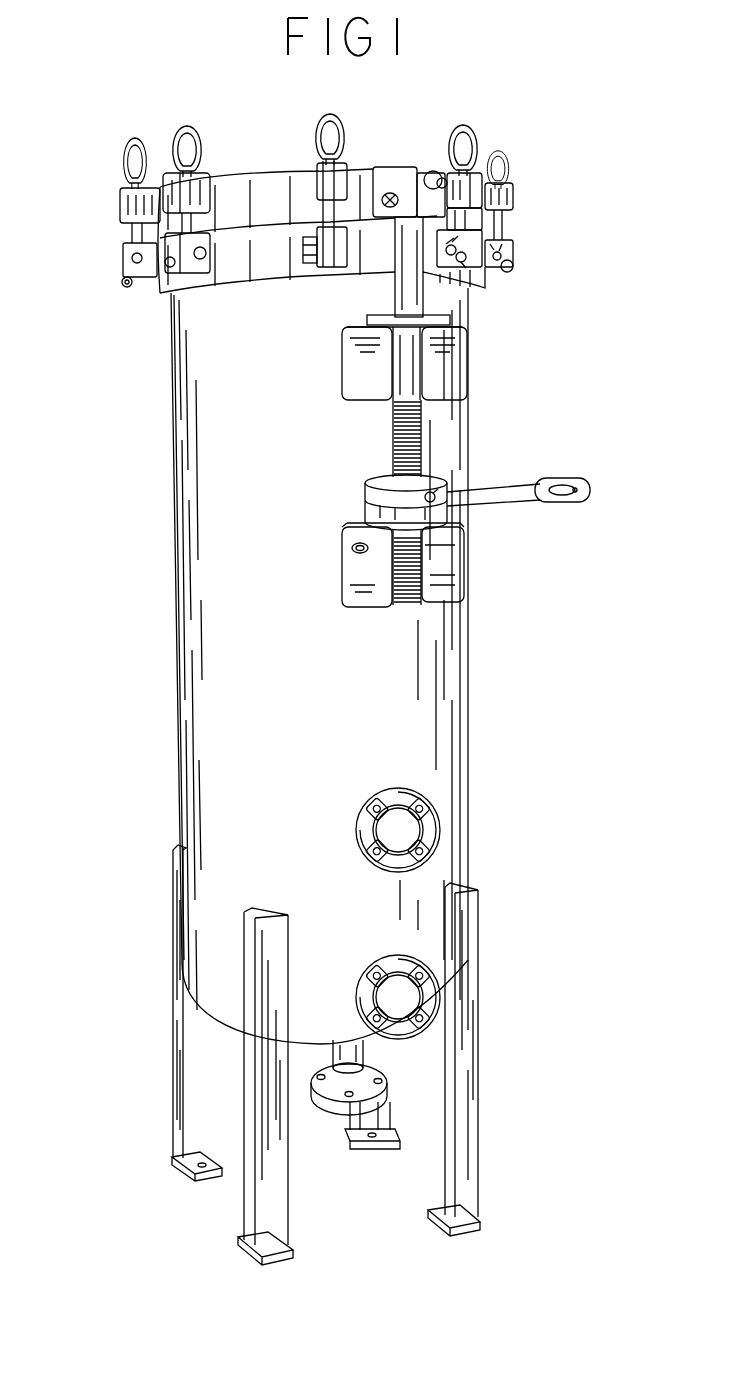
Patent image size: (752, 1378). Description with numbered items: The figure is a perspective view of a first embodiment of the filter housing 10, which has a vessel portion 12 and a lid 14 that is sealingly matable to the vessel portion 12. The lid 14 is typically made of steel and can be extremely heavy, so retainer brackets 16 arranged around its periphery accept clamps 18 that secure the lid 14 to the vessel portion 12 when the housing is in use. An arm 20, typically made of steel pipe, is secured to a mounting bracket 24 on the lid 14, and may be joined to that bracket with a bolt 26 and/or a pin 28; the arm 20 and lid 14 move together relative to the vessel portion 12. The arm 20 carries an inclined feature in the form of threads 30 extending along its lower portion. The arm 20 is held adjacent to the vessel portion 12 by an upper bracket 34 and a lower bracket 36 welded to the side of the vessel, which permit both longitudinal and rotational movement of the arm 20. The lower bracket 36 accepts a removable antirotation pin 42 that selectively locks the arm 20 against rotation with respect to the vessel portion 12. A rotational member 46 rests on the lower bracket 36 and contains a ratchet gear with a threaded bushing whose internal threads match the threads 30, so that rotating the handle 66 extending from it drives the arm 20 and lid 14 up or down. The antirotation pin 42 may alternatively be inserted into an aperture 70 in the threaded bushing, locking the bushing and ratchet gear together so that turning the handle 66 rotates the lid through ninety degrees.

The filter housing 10 is at (138, 348).
The vessel portion 12 is at (197, 450).
The lid 14 is at (272, 185).
The retainer brackets 16 is at (120, 207).
The clamps 18 is at (180, 126).
The arm 20 is at (413, 302).
The mounting bracket 24 is at (358, 293).
The bolt 26 is at (362, 272).
The pin 28 is at (440, 172).
The threads 30 is at (420, 435).
The upper bracket 34 is at (343, 357).
The lower bracket 36 is at (345, 592).
The antirotation pin 42 is at (355, 548).
The rotational member 46 is at (356, 497).
The handle 66 is at (545, 500).
The aperture 70 is at (450, 490).